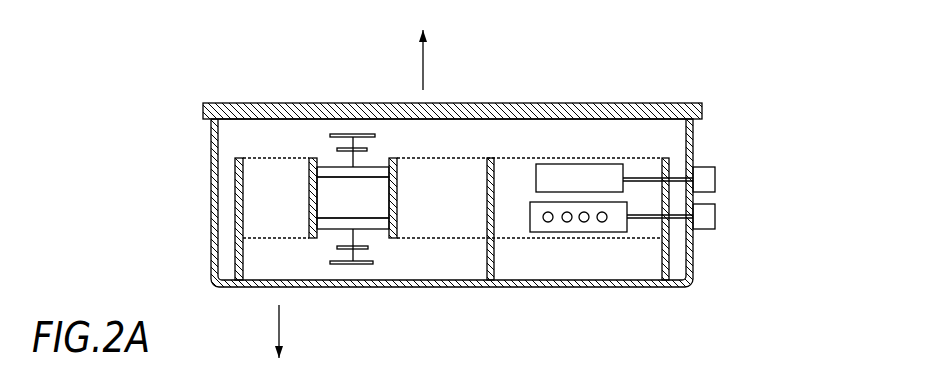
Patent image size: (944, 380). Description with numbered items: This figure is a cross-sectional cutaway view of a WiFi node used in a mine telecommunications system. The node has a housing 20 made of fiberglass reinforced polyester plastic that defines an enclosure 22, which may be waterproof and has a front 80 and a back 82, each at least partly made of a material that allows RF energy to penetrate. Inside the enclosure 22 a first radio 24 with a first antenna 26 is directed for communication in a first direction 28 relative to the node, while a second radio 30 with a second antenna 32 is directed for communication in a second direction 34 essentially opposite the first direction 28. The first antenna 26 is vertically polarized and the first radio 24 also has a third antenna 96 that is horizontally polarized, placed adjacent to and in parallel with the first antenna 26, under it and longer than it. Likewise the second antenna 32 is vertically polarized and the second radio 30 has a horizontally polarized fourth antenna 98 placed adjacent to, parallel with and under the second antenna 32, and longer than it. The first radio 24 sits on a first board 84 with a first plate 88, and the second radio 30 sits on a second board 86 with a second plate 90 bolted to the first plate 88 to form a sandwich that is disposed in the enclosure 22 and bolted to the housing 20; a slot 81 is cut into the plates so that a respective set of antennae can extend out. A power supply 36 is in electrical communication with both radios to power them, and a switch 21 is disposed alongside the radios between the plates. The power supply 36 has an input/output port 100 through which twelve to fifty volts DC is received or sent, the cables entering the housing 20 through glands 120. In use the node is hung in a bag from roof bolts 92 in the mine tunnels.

The housing 20 is at (695, 127).
The switch 21 is at (577, 232).
The enclosure 22 is at (678, 256).
The first radio 24 is at (381, 165).
The first antenna 26 is at (344, 133).
The first direction 28 is at (423, 57).
The second radio 30 is at (377, 231).
The second antenna 32 is at (340, 263).
The second direction 34 is at (279, 316).
The power supply 36 is at (551, 178).
The front 80 is at (513, 95).
The slot 81 is at (307, 240).
The back 82 is at (480, 290).
The first board 84 is at (303, 136).
The second board 86 is at (333, 231).
The first plate 88 is at (582, 153).
The second plate 90 is at (613, 240).
The roof bolts 92 is at (307, 190).
The third antenna 96 is at (329, 150).
The fourth antenna 98 is at (367, 248).
The first input/output port 100 is at (610, 153).
The glands 120 is at (715, 172).